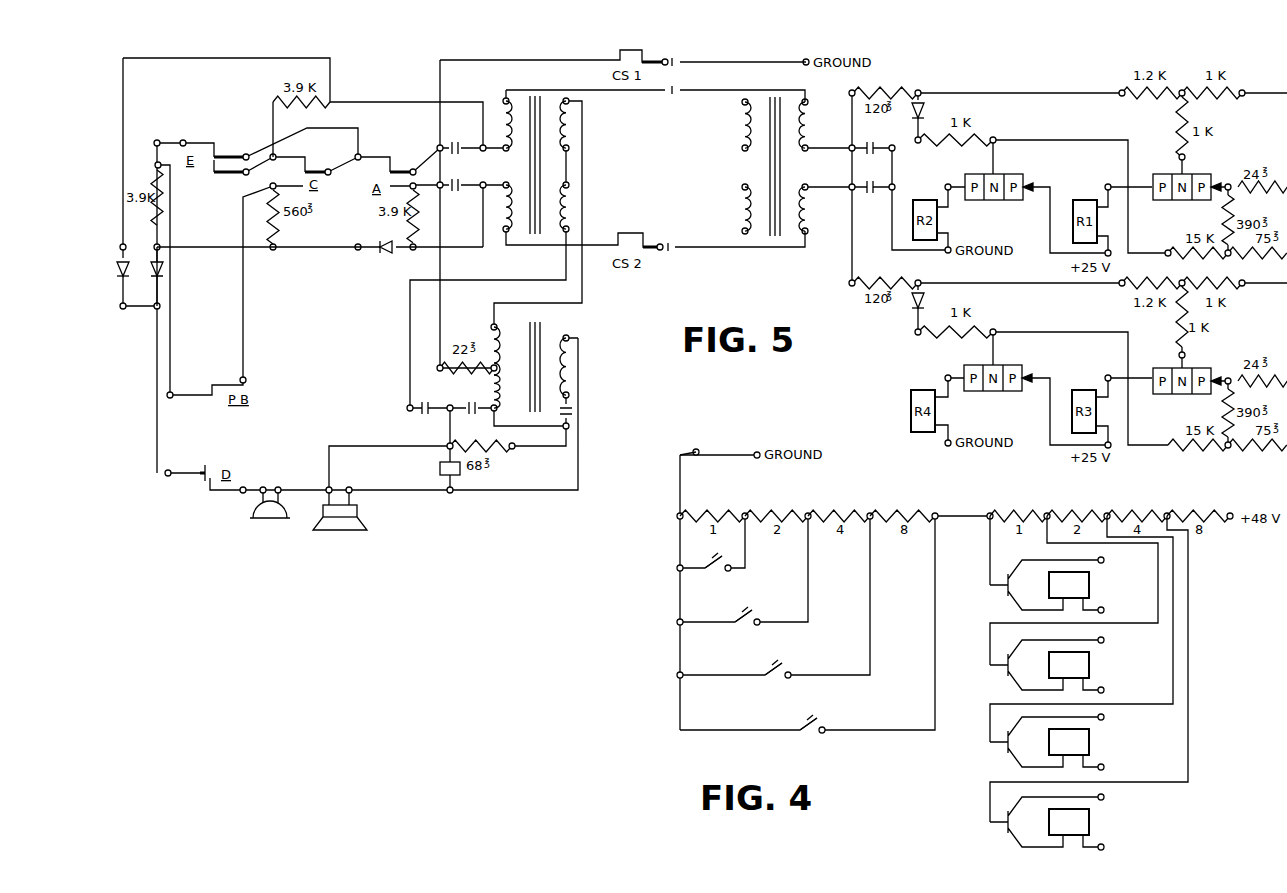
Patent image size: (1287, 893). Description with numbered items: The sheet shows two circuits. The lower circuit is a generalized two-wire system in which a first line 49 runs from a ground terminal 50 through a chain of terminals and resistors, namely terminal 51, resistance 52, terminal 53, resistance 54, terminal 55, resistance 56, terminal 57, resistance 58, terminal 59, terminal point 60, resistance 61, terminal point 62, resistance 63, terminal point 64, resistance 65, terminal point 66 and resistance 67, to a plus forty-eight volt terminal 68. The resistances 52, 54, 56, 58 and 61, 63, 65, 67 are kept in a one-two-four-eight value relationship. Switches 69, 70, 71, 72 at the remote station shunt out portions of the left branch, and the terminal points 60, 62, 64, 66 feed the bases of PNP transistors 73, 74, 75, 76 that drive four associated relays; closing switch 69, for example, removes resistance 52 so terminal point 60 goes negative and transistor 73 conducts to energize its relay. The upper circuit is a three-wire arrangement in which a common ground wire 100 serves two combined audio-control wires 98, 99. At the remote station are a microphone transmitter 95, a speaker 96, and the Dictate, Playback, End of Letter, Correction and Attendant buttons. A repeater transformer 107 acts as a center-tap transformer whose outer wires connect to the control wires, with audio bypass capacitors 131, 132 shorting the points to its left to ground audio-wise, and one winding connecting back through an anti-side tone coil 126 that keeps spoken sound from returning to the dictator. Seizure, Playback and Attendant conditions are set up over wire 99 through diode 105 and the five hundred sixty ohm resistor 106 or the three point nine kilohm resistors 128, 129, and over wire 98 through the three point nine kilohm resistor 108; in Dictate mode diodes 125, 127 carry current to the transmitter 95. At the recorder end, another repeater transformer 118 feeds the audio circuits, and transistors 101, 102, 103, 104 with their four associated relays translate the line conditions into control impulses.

In FIG. 4, the first line 49 is at (700, 456).
In FIG. 4, the ground terminal 50 is at (760, 458).
In FIG. 4, the terminal 51 is at (690, 506).
In FIG. 4, the resistance 52 is at (714, 506).
In FIG. 4, the terminal 53 is at (744, 512).
In FIG. 4, the resistance 54 is at (770, 512).
In FIG. 4, the terminal 55 is at (796, 506).
In FIG. 4, the resistance 56 is at (822, 506).
In FIG. 4, the terminal 57 is at (858, 506).
In FIG. 4, the resistance 58 is at (886, 506).
In FIG. 4, the terminal 59 is at (940, 512).
In FIG. 4, the terminal point 60 is at (990, 512).
In FIG. 4, the resistance 61 is at (1018, 512).
In FIG. 4, the terminal point 62 is at (1048, 512).
In FIG. 4, the resistance 63 is at (1080, 512).
In FIG. 4, the terminal point 64 is at (1108, 512).
In FIG. 4, the resistance 65 is at (1142, 512).
In FIG. 4, the terminal point 66 is at (1170, 512).
In FIG. 4, the resistance 67 is at (1204, 512).
In FIG. 4, the +48 volt terminal 68 is at (1233, 522).
In FIG. 4, the switch 69 is at (716, 572).
In FIG. 4, the switch 70 is at (746, 626).
In FIG. 4, the switch 71 is at (776, 679).
In FIG. 4, the switch 72 is at (810, 734).
In FIG. 4, the PNP transistor 73 is at (1046, 564).
In FIG. 4, the PNP transistor 74 is at (1073, 604).
In FIG. 4, the PNP transistor 75 is at (1080, 643).
In FIG. 4, the PNP transistor 76 is at (1088, 683).
In FIG. 5, the microphone transmitter 95 is at (270, 525).
In FIG. 5, the speaker 96 is at (340, 532).
In FIG. 5, the combined audio-control wire 98 is at (722, 90).
In FIG. 5, the combined audio-control wire 99 is at (710, 245).
In FIG. 5, the common ground wire 100 is at (722, 62).
In FIG. 5, the transistor 101 is at (1185, 172).
In FIG. 5, the transistor 102 is at (1010, 172).
In FIG. 5, the transistor 103 is at (1185, 366).
In FIG. 5, the transistor 104 is at (1010, 363).
In FIG. 5, the diode 105 is at (386, 255).
In FIG. 5, the 560 ohm resistor 106 is at (278, 225).
In FIG. 5, the repeater transformer 107 is at (534, 165).
In FIG. 5, the 3.9 kilohm resistor 108 is at (312, 105).
In FIG. 5, the repeater transformer 118 is at (785, 166).
In FIG. 5, the diode 125 is at (165, 273).
In FIG. 5, the anti-side tone coil 126 is at (525, 367).
In FIG. 5, the diode 127 is at (128, 290).
In FIG. 5, the 3.9 kilohm resistor 128 is at (165, 198).
In FIG. 5, the 3.9 kilohm resistor 129 is at (320, 259).
In FIG. 5, the capacitor 131 is at (468, 144).
In FIG. 5, the capacitor 132 is at (462, 192).